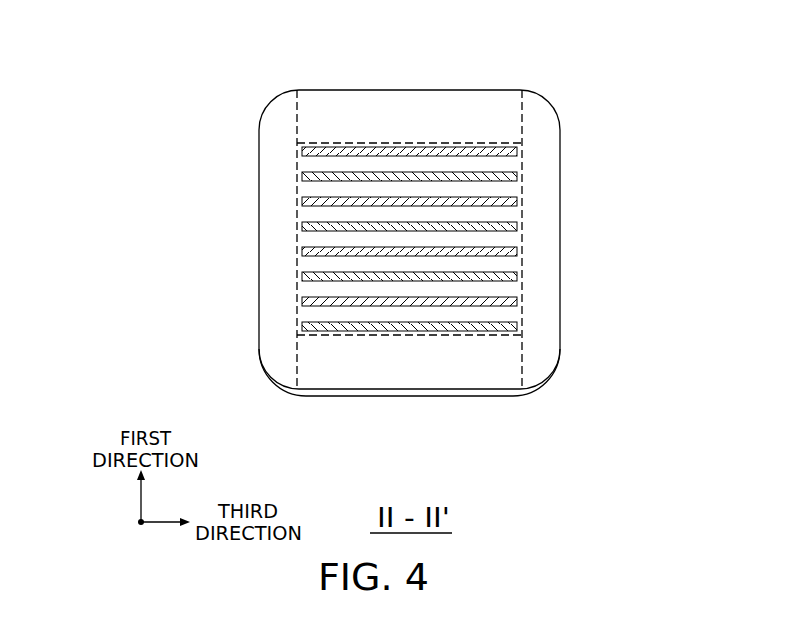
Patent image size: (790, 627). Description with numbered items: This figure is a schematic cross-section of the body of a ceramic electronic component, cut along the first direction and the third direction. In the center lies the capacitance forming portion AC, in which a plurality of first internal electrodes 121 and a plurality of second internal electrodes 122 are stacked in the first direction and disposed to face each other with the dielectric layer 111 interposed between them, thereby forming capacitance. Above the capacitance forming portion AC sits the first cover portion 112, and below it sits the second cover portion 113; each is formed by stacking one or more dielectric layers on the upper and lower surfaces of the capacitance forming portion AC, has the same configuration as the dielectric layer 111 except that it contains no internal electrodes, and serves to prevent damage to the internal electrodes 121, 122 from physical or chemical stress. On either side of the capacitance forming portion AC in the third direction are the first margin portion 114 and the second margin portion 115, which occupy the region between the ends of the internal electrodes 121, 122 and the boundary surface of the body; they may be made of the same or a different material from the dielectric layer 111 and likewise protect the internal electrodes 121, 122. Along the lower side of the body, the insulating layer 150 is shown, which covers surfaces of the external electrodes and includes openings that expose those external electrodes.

The dielectric layer 111 is at (343, 160).
The first cover portion 112 is at (395, 103).
The second cover portion 113 is at (433, 376).
The first margin portion 114 is at (270, 322).
The second margin portion 115 is at (544, 240).
The first internal electrode 121 is at (440, 145).
The second internal electrode 122 is at (478, 227).
The insulating layer 150 is at (477, 393).
The capacitance forming portion AC is at (532, 300).